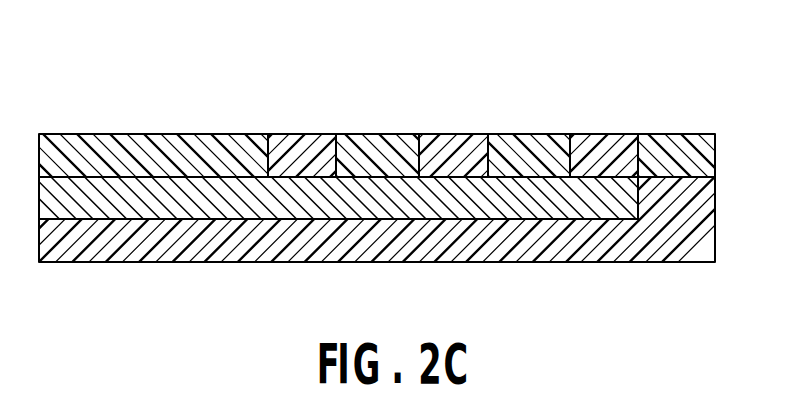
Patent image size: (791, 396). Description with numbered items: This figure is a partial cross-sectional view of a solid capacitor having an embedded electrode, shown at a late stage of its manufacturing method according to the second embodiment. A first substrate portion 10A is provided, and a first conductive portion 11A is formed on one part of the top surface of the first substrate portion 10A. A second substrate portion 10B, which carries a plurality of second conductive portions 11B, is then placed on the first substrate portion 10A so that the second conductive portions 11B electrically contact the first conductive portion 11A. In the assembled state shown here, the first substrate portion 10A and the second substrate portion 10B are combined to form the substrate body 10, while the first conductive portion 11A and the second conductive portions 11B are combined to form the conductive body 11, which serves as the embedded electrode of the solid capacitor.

The substrate body 10 is at (130, 65).
The first substrate portion 10A is at (106, 231).
The second substrate portion 10B is at (202, 151).
The conductive body 11 is at (385, 65).
The first conductive portion 11A is at (373, 206).
The second conductive portions 11B is at (453, 150).